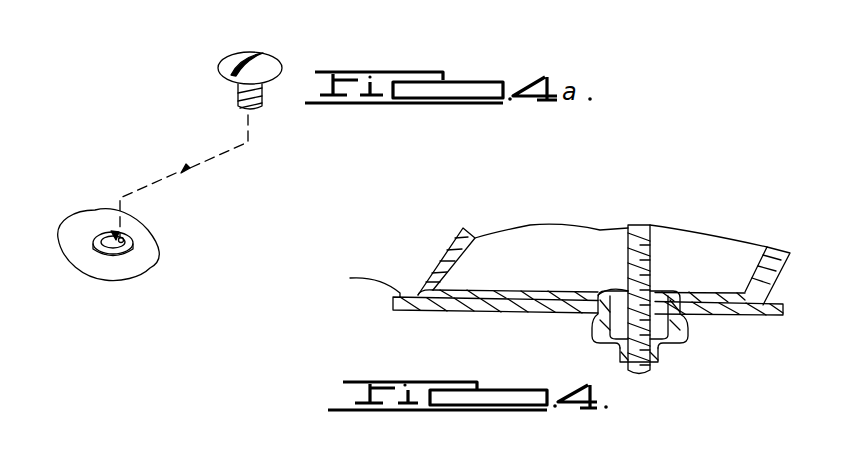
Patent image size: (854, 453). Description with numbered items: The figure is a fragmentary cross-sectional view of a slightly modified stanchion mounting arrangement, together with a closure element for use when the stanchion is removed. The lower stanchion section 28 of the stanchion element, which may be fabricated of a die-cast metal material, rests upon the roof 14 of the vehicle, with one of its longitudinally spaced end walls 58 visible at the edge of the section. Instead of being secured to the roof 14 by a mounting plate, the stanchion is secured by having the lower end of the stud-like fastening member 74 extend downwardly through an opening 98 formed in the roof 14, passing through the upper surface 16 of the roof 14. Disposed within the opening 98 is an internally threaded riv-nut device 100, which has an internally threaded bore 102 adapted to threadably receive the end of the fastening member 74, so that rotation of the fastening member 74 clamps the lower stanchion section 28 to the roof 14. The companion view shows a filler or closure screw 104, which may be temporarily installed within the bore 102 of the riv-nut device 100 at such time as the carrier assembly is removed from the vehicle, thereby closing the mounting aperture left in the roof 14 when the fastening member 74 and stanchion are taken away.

In FIG. 4, the roof 14 is at (448, 311).
In FIG. 4, the surface of the roof 16 is at (362, 280).
In FIG. 4, the lower stanchion section 28 is at (489, 293).
In FIG. 4, the end wall 58 is at (778, 263).
In FIG. 4, the fastening member 74 is at (651, 243).
In FIG. 4, the opening 98 is at (623, 298).
In FIG. 4A, the riv-nut device 100 is at (150, 267).
In FIG. 4, the riv-nut device 100 is at (596, 338).
In FIG. 4A, the internally threaded bore 102 is at (131, 243).
In FIG. 4, the internally threaded bore 102 is at (660, 354).
In FIG. 4A, the closure screw 104 is at (218, 69).